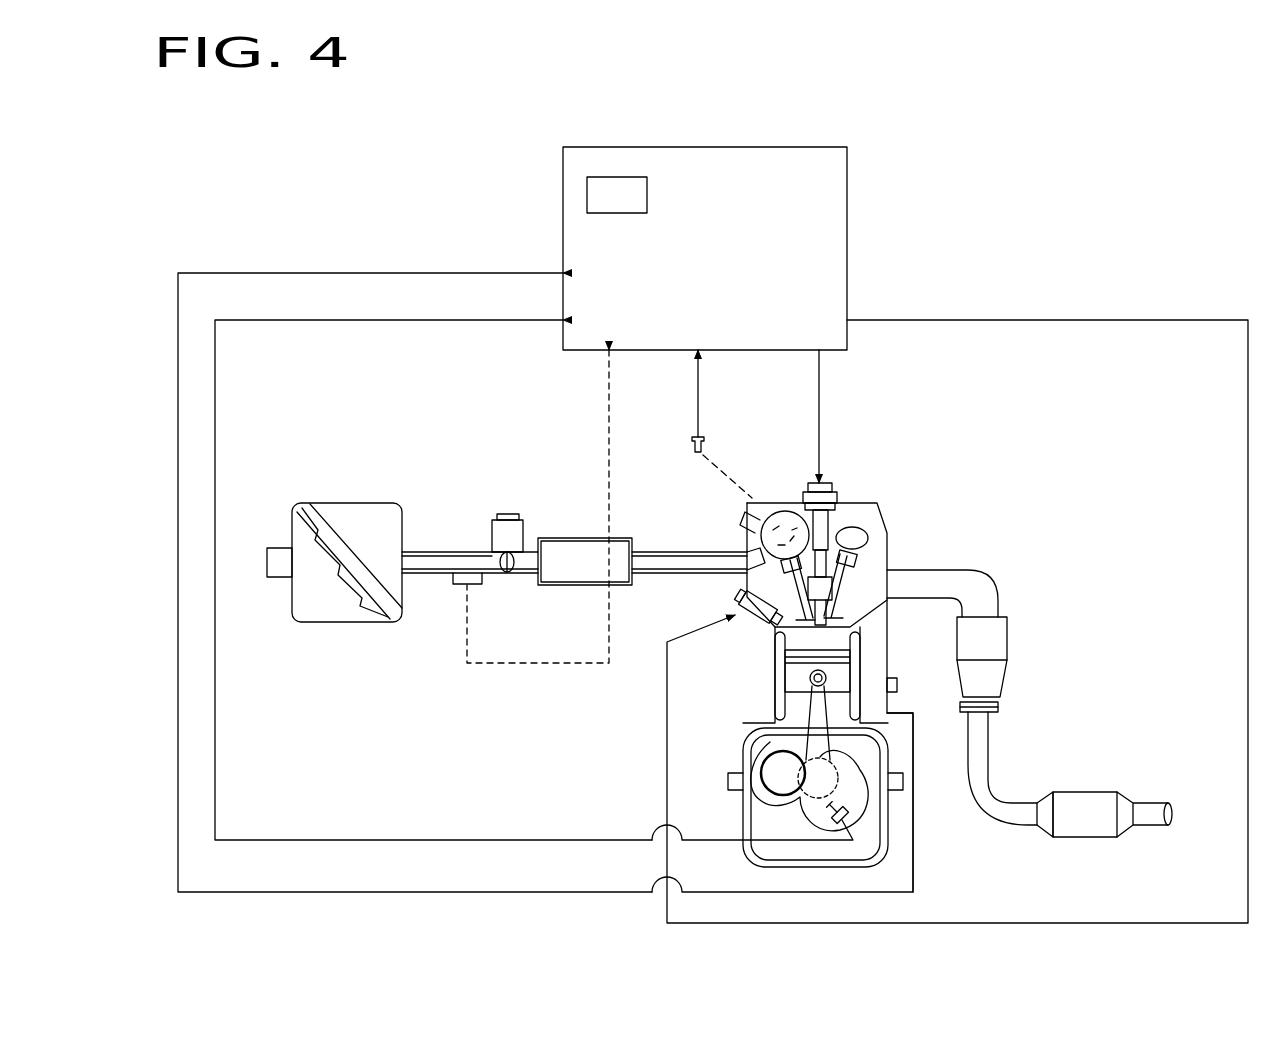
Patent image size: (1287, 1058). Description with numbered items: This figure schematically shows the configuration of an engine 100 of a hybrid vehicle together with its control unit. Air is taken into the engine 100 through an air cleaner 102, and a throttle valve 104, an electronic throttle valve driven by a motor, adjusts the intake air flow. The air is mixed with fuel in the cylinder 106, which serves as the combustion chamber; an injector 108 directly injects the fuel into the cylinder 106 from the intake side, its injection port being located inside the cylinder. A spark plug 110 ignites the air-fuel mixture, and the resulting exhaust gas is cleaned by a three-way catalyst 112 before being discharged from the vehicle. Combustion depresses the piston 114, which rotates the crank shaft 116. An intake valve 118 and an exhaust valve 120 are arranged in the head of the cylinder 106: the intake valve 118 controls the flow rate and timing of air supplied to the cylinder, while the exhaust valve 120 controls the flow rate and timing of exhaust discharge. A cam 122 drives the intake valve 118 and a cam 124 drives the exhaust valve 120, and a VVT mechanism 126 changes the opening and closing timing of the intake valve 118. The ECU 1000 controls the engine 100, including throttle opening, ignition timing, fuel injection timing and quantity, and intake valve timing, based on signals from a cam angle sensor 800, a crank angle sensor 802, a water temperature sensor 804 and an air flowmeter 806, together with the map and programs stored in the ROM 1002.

The engine 100 is at (955, 510).
The air cleaner 102 is at (340, 503).
The throttle valve 104 is at (527, 540).
The cylinder 106 is at (800, 645).
The injector 108 is at (740, 595).
The spark plug 110 is at (837, 493).
The three-way catalyst 112 is at (1008, 635).
The piston 114 is at (783, 708).
The crank shaft 116 is at (857, 818).
The intake valve 118 is at (750, 553).
The exhaust valve 120 is at (892, 555).
The cam 122 is at (780, 515).
The cam 124 is at (866, 530).
The VVT mechanism 126 is at (785, 530).
The cam angle sensor 800 is at (704, 432).
The crank angle sensor 802 is at (852, 815).
The water temperature sensor 804 is at (897, 683).
The air flowmeter 806 is at (458, 585).
The ECU 1000 is at (697, 147).
The ROM 1002 is at (612, 177).